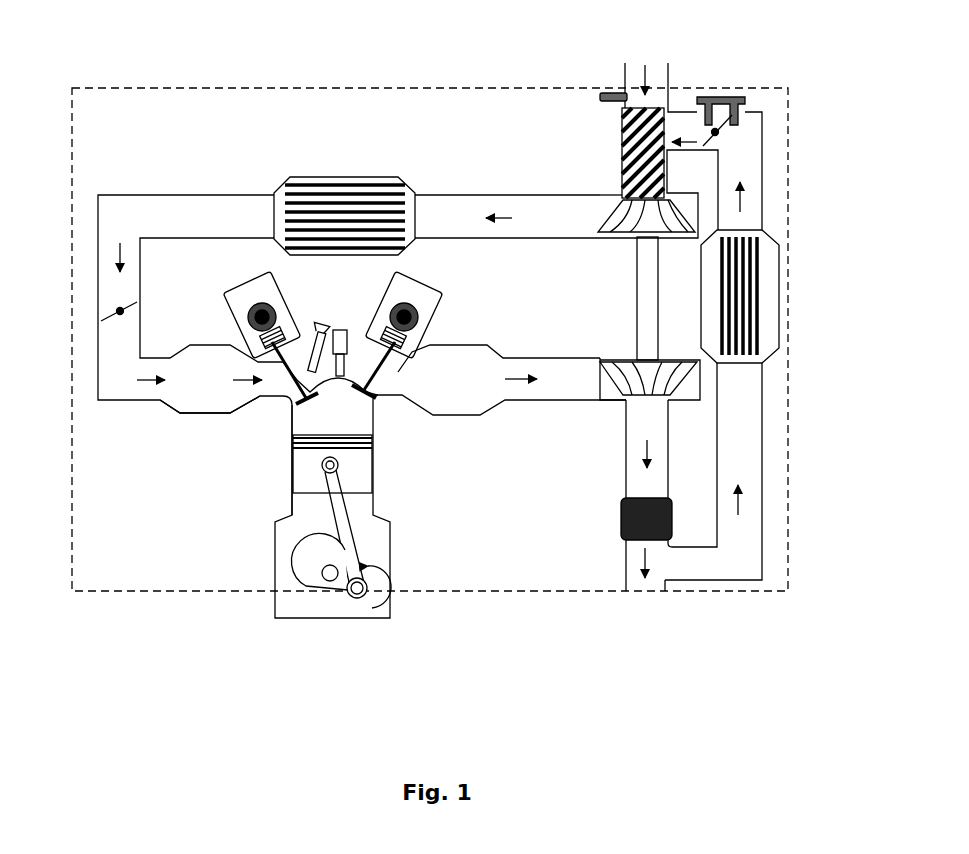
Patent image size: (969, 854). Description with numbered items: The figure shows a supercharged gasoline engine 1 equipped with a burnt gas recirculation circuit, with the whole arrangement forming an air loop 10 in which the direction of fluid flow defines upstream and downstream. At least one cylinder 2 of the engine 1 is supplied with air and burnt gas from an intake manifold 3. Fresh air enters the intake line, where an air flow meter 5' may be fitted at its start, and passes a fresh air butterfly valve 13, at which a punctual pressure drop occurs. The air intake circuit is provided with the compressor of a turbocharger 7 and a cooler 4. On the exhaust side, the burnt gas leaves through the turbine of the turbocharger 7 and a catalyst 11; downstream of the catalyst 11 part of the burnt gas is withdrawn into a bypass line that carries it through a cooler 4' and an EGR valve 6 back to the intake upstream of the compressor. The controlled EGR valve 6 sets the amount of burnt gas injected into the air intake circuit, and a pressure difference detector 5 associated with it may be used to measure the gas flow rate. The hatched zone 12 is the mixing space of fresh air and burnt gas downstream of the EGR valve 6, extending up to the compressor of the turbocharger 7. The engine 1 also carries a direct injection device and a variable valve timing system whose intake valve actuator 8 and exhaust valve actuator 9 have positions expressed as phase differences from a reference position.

The gasoline engine 1 is at (205, 628).
The cylinder 2 is at (376, 477).
The intake manifold 3 is at (190, 414).
The cooler 4 is at (344, 154).
The cooler 4' is at (790, 329).
The pressure difference detector 5 is at (749, 63).
The air flow meter 5' is at (562, 59).
The EGR valve 6 is at (727, 138).
The turbocharger 7 is at (667, 306).
The intake valve actuator 8 is at (237, 290).
The exhaust valve actuator 9 is at (405, 290).
The air loop 10 is at (545, 597).
The catalyst 11 is at (620, 504).
The hatched zone 12 is at (622, 138).
The fresh air butterfly valve 13 is at (108, 311).